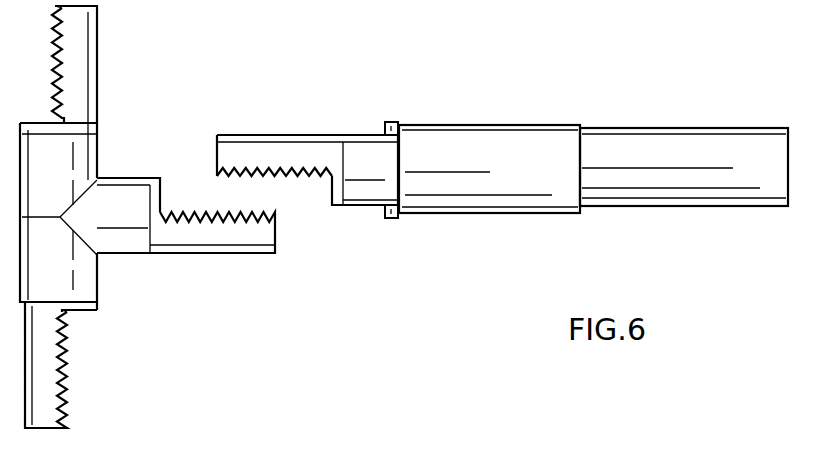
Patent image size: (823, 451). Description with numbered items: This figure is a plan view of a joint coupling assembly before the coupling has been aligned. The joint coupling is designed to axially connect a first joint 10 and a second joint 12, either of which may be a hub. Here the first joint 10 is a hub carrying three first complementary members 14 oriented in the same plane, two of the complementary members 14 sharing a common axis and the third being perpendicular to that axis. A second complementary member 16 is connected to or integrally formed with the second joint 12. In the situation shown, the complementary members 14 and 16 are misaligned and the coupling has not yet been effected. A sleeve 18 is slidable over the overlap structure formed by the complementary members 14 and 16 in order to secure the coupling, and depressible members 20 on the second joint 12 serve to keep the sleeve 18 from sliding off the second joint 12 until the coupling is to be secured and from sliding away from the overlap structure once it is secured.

The first joint 10 is at (117, 242).
The second joint 12 is at (650, 135).
The first complementary member 14 is at (88, 107).
The second complementary member 16 is at (268, 137).
The sleeve 18 is at (470, 142).
The depressible member 20 is at (388, 122).